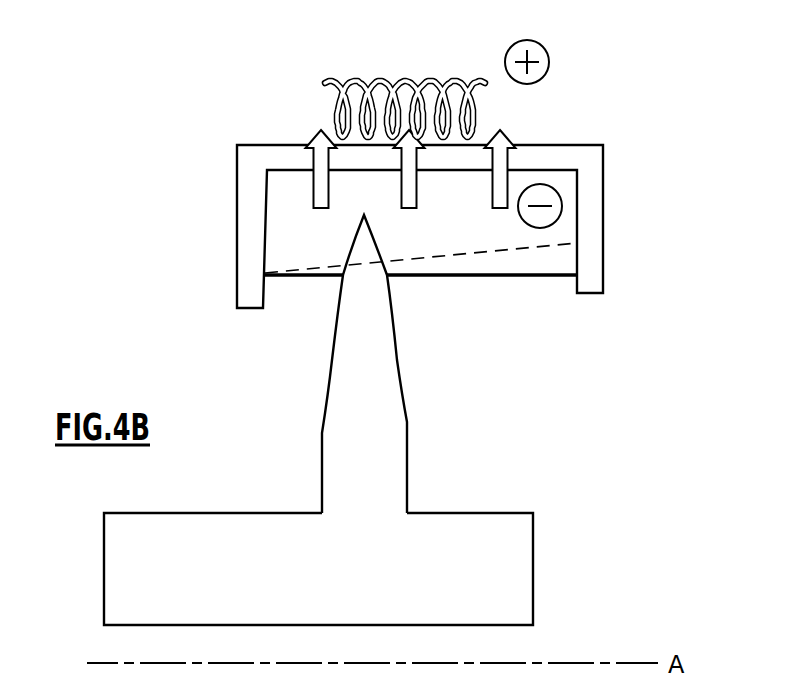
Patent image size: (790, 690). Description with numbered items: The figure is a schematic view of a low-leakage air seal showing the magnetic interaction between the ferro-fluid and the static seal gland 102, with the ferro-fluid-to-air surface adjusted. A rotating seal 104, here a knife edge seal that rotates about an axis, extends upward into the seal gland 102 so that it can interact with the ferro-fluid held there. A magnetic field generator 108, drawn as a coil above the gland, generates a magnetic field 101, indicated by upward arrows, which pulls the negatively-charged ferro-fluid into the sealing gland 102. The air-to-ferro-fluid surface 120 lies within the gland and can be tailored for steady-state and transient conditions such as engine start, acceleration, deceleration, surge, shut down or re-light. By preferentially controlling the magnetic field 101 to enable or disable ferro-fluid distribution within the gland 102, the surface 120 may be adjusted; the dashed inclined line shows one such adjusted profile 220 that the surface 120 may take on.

The magnetic field 101 is at (504, 134).
The static seal gland 102 is at (603, 223).
The rotating seal 104 is at (398, 450).
The magnetic field generator 108 is at (465, 82).
The air-to-ferro-fluid surface 120 is at (427, 278).
The profile 220 is at (502, 251).